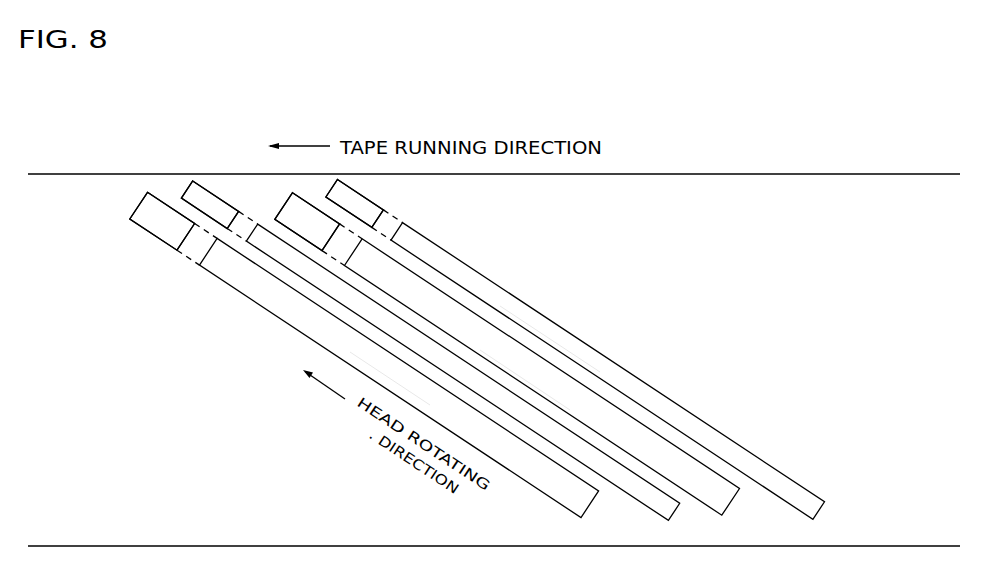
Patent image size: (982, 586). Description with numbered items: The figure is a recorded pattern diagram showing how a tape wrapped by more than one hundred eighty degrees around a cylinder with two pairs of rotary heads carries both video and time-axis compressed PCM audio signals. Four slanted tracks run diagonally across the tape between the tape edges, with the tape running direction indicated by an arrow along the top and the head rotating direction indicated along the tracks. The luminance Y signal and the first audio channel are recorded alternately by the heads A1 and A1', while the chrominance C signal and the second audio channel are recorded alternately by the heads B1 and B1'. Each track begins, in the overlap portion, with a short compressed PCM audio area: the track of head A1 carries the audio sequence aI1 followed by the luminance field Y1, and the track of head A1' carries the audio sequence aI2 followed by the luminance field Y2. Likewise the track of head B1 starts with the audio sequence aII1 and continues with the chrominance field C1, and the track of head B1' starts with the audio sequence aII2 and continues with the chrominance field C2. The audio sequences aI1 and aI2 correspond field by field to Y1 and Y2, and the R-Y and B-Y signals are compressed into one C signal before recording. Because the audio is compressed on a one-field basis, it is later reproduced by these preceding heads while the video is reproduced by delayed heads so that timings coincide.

The rotary head A1 is at (356, 351).
The rotary head B1 is at (420, 350).
The rotary head A1' is at (496, 349).
The rotary head B1' is at (564, 346).
The aI signal sequence aI1 is at (162, 221).
The aII signal sequence aII1 is at (209, 205).
The aI signal sequence aI2 is at (307, 222).
The aII signal sequence aII2 is at (355, 204).
The C signal C1 is at (430, 375).
The C signal C2 is at (550, 339).
The Y signal sequence Y1 is at (390, 378).
The Y signal sequence Y2 is at (525, 380).